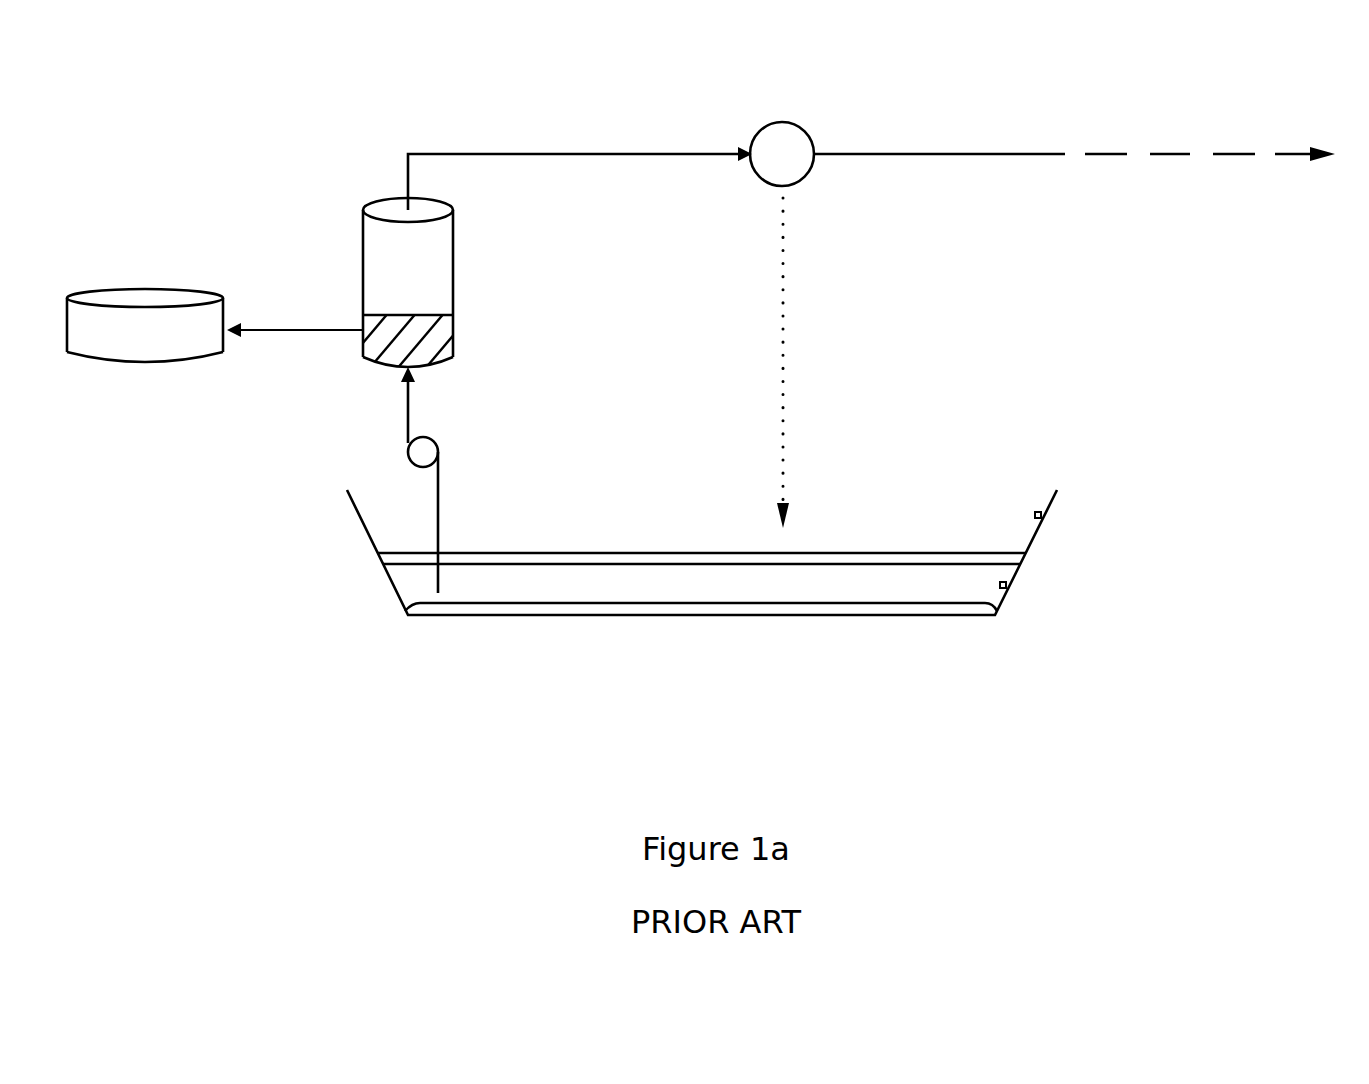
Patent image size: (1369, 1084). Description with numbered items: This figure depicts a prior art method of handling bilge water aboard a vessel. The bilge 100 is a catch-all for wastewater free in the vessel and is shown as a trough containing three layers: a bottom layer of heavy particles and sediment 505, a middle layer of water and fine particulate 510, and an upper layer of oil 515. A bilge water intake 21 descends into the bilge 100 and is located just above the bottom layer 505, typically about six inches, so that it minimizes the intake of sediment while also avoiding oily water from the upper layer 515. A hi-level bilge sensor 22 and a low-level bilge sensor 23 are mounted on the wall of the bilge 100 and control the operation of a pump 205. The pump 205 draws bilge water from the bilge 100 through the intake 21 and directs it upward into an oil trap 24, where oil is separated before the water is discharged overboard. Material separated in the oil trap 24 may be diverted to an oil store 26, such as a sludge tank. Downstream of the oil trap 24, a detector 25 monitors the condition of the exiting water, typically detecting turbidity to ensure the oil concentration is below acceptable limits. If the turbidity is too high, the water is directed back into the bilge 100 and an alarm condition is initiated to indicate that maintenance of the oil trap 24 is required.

The bilge water intake 21 is at (425, 592).
The hi-level bilge sensor 22 is at (1068, 515).
The low-level bilge sensor 23 is at (1022, 597).
The oil trap 24 is at (546, 295).
The detector 25 is at (1042, 325).
The oil store 26 is at (214, 325).
The bilge 100 is at (1088, 577).
The pump 205 is at (373, 450).
The bottom layer of heavy particles and sediment 505 is at (852, 608).
The middle layer of water and fine particulate 510 is at (717, 583).
The upper layer of oil 515 is at (877, 560).